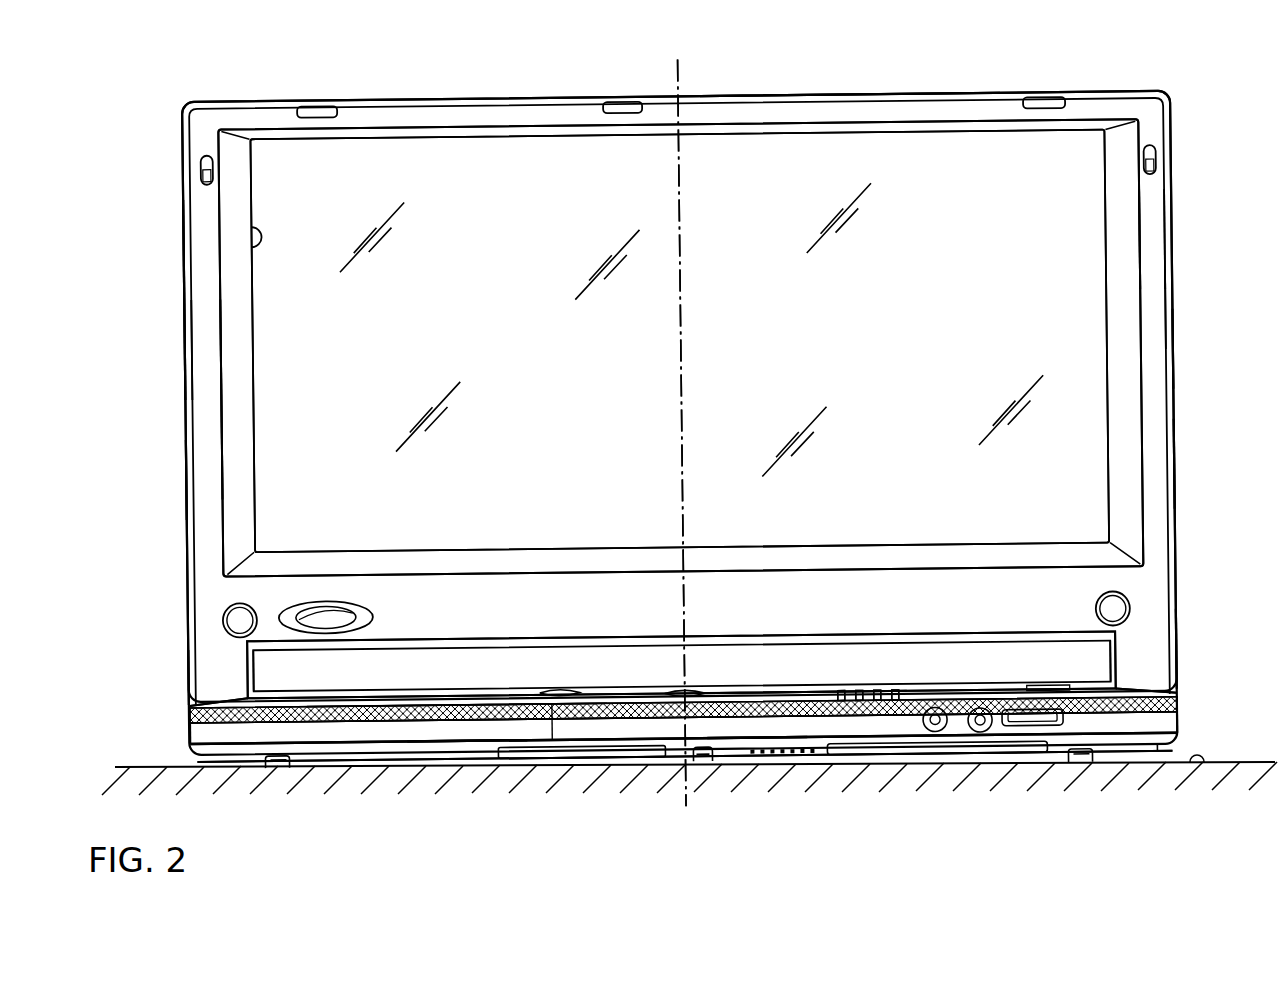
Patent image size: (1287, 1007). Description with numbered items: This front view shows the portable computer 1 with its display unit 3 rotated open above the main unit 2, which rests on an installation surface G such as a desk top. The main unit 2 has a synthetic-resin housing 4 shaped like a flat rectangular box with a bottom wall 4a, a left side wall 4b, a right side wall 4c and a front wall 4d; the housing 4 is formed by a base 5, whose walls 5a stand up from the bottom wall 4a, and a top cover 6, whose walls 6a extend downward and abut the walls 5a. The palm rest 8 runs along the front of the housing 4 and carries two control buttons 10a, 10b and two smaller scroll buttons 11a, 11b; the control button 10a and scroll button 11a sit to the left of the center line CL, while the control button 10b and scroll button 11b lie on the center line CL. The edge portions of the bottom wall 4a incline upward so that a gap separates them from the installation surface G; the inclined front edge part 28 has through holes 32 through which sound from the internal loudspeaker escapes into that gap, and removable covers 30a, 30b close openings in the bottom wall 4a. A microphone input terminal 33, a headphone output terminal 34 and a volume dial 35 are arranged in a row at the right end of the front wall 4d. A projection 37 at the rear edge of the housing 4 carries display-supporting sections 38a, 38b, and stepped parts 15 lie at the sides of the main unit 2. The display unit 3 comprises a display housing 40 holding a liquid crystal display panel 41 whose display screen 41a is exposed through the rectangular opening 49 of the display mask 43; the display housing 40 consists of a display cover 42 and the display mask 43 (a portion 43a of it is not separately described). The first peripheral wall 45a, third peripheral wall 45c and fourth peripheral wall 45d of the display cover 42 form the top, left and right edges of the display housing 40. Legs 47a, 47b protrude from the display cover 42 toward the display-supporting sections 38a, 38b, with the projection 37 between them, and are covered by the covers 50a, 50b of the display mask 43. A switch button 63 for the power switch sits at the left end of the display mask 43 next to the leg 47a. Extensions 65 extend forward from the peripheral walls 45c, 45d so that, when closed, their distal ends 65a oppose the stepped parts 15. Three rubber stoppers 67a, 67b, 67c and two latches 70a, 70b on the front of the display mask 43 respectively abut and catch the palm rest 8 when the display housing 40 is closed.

The portable computer 1 is at (1193, 412).
The main unit 2 is at (1186, 705).
The display unit 3 is at (434, 91).
The housing 4 is at (402, 838).
The bottom wall 4a is at (736, 734).
The left side wall 4b is at (188, 735).
The right side wall 4c is at (1176, 727).
The front wall 4d is at (820, 698).
The base 5 is at (350, 744).
The walls 5a is at (452, 746).
The top cover 6 is at (386, 723).
The walls 6a is at (434, 710).
The palm rest 8 is at (772, 689).
The control button 10a is at (559, 689).
The control button 10b is at (699, 689).
The scroll button 11a is at (570, 708).
The scroll button 11b is at (672, 706).
The stepped part 15 is at (190, 698).
The inclined front edge part 28 is at (187, 768).
The removable cover 30a is at (527, 754).
The removable cover 30b is at (862, 754).
The through holes 32 is at (800, 760).
The microphone input terminal 33 is at (933, 742).
The headphone output terminal 34 is at (978, 742).
The volume dial 35 is at (1040, 742).
The projection 37 is at (888, 644).
The display-supporting section 38a is at (243, 650).
The display-supporting section 38b is at (1118, 648).
The display housing 40 is at (1220, 236).
The liquid crystal display panel 41 is at (1103, 511).
The display screen 41a is at (665, 329).
The display cover 42 is at (1172, 278).
The display mask 43 is at (1158, 243).
The inner frame side 43a is at (200, 410).
The first peripheral wall 45a is at (823, 91).
The third peripheral wall 45c is at (184, 277).
The fourth peripheral wall 45d is at (1174, 477).
The first leg 47a is at (205, 676).
The second leg 47b is at (1167, 640).
The rectangular opening 49 is at (252, 238).
The cover 50a is at (250, 675).
The cover 50b is at (1112, 666).
The switch button 63 is at (335, 613).
The extension 65 is at (189, 345).
The distal end 65a is at (189, 489).
The first stopper 67a is at (317, 108).
The second stopper 67b is at (1045, 100).
The third stopper 67c is at (627, 107).
The latch 70a is at (206, 178).
The latch 70b is at (1152, 161).
The center line CL is at (686, 80).
The installation surface G is at (1198, 766).